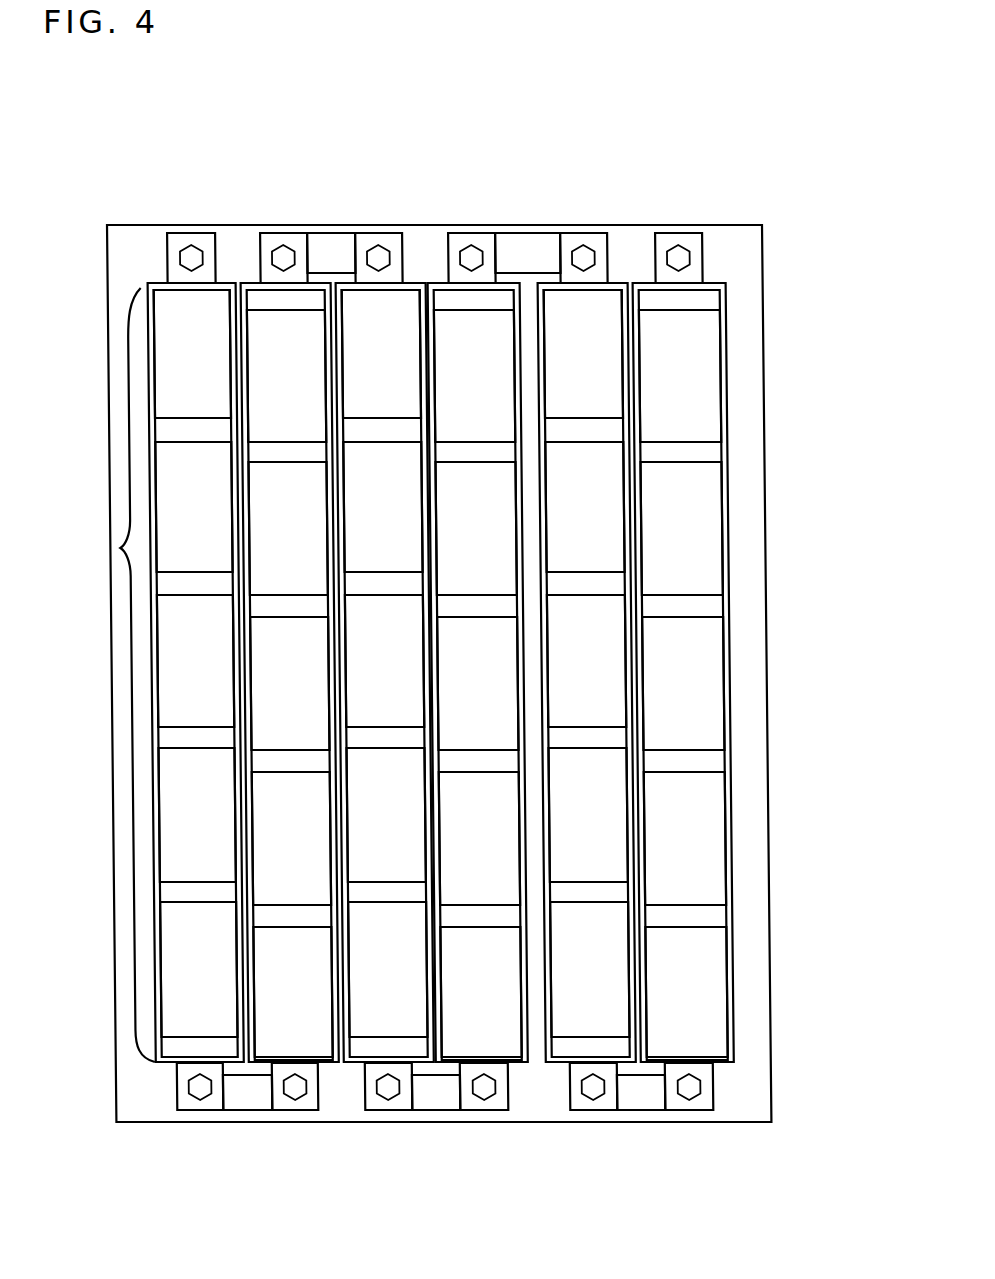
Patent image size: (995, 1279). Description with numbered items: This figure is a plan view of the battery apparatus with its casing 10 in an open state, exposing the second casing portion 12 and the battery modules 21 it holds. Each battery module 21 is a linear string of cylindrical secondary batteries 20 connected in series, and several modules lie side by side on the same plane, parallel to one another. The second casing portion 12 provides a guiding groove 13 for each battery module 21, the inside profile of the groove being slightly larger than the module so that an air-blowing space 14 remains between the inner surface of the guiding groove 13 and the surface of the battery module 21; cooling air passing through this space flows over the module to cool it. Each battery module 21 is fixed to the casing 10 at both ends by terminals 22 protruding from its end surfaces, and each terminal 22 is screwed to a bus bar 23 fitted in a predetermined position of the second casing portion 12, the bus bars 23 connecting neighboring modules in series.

The casing 10 is at (455, 674).
The second casing portion 12 is at (743, 653).
The guiding groove 13 is at (152, 495).
The air-blowing space 14 is at (150, 532).
The secondary battery 20 is at (169, 392).
The battery module 21 is at (109, 675).
The terminal 22 is at (207, 240).
The bus bar 23 is at (342, 240).